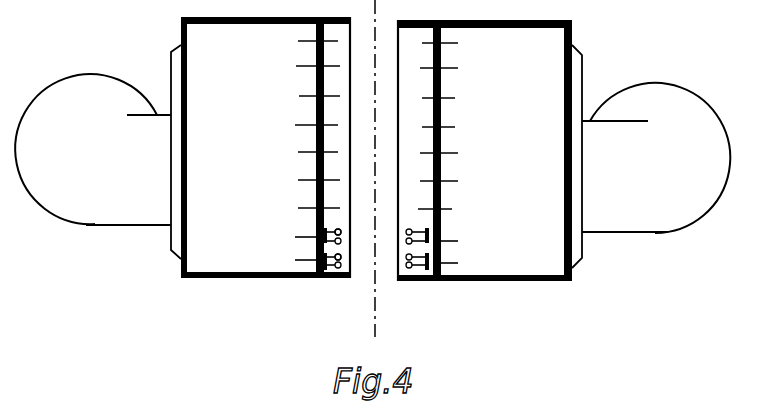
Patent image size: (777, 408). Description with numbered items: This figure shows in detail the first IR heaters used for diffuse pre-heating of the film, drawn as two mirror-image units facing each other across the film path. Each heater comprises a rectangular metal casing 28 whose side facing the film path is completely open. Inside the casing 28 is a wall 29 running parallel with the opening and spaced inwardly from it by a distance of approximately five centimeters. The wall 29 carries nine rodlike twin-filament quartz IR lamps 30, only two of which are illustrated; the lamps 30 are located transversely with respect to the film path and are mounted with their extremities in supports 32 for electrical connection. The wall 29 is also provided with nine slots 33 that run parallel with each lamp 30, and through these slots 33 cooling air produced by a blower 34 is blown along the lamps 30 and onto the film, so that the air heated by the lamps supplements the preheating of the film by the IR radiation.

The rectangular metal casing 28 is at (220, 278).
The wall 29 is at (316, 76).
The IR rodlike twin-filament quartz lamp 30 is at (342, 236).
The support 32 is at (328, 278).
The slot 33 is at (322, 235).
The blower 34 is at (106, 221).